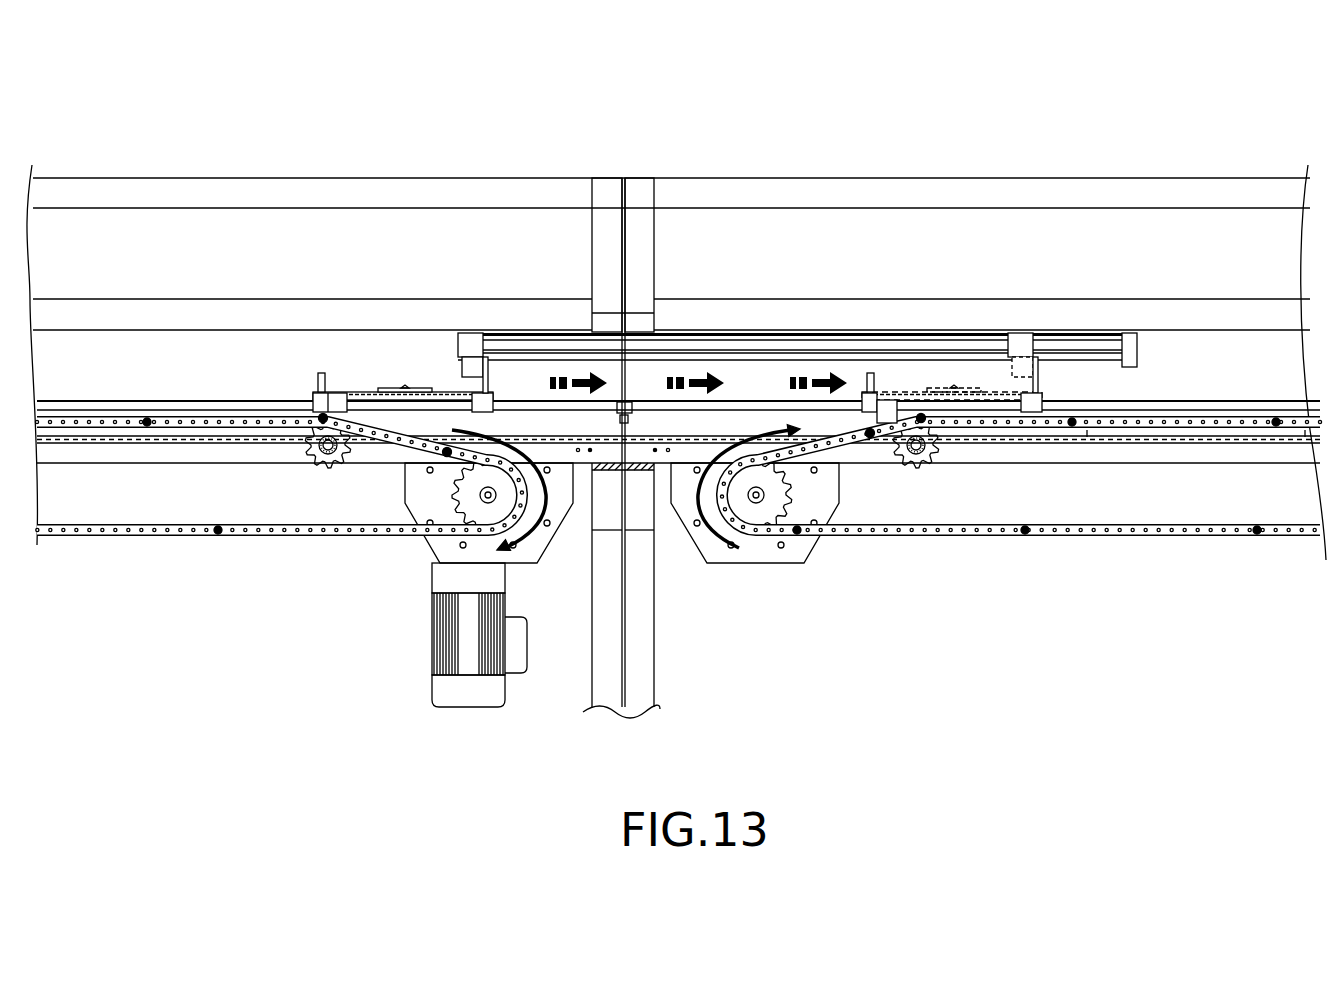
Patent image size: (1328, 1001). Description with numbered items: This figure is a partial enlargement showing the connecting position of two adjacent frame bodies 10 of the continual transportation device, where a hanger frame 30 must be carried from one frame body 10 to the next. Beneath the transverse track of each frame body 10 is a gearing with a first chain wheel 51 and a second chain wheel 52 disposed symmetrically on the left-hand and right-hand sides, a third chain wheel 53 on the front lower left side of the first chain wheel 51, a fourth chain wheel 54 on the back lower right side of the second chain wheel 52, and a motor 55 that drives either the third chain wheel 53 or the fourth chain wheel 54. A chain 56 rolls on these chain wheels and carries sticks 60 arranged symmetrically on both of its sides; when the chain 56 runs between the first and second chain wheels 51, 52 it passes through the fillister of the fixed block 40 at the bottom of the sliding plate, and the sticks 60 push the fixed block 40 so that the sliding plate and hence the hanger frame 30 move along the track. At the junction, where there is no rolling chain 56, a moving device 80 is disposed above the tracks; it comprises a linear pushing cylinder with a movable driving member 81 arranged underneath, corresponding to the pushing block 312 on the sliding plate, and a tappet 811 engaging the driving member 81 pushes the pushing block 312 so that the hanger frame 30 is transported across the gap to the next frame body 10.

The frame body 10 is at (100, 163).
The hanger frame 30 is at (406, 378).
The fixed block 40 is at (338, 403).
The first chain wheel 51 is at (917, 468).
The second chain wheel 52 is at (327, 464).
The third chain wheel 53 is at (763, 517).
The fourth chain wheel 54 is at (470, 505).
The motor 55 is at (438, 685).
The chain 56 is at (135, 536).
The stick 60 is at (321, 415).
The moving device 80 is at (780, 337).
The driving member 81 is at (472, 341).
The tappet 811 is at (480, 369).
The pushing block 312 is at (1042, 393).